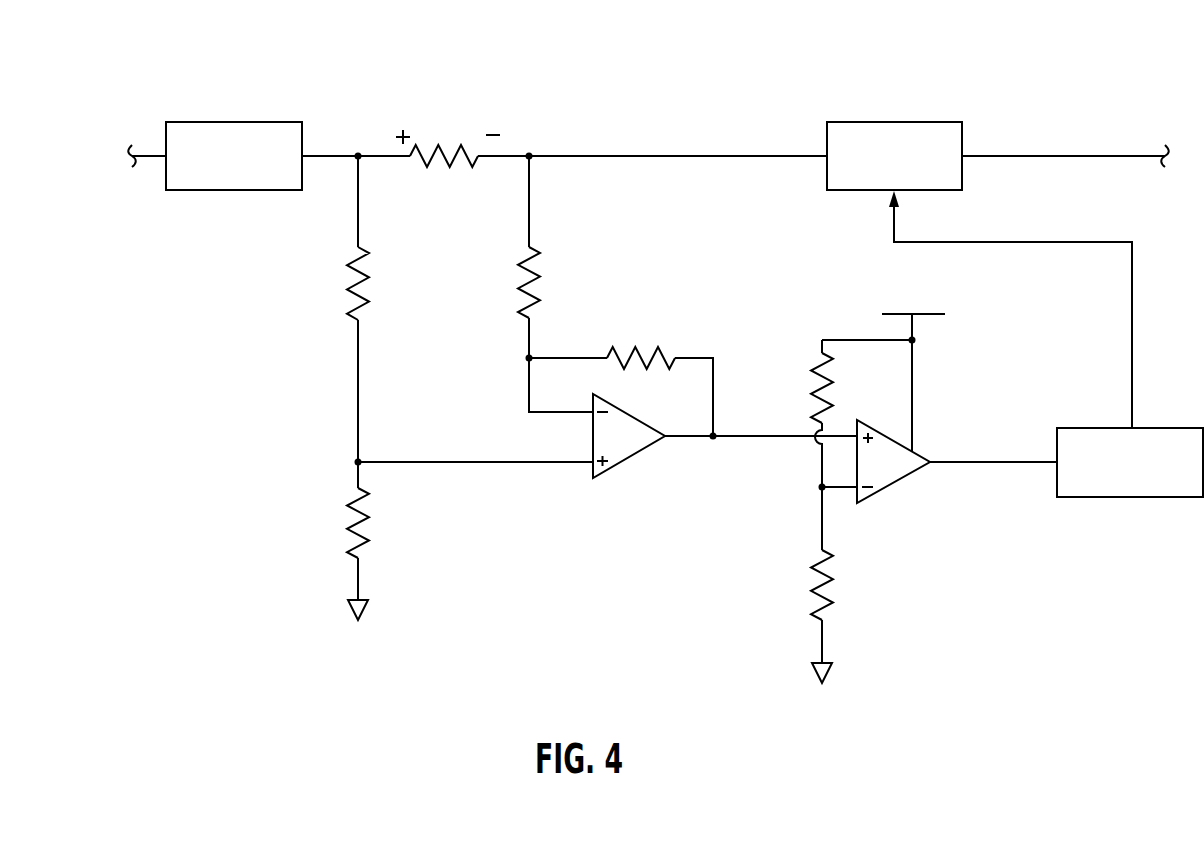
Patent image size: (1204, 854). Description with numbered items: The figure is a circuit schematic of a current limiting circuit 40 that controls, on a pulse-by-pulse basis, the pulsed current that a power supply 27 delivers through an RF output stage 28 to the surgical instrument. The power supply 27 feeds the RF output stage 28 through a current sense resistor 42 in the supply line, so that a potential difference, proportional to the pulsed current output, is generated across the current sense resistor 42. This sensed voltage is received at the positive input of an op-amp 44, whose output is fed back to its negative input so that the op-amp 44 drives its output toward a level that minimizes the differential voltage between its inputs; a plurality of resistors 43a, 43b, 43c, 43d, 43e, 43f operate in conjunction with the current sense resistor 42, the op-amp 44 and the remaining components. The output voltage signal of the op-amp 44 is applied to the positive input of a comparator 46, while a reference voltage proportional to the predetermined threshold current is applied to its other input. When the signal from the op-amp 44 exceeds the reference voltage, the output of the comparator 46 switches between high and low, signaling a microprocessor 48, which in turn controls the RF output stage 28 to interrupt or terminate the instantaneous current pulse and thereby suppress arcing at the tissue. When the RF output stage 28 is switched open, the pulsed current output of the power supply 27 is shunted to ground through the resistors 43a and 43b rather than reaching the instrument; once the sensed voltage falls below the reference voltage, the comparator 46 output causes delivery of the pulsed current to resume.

The current limiting circuit 40 is at (684, 68).
The power supply 27 is at (207, 121).
The RF output stage 28 is at (860, 121).
The current sense resistor 42 is at (463, 162).
The resistor 43a is at (370, 292).
The resistor 43b is at (370, 530).
The resistor 43c is at (542, 292).
The resistor 43d is at (645, 347).
The resistor 43e is at (810, 378).
The resistor 43f is at (832, 592).
The op-amp 44 is at (634, 458).
The comparator 46 is at (900, 481).
The microprocessor 48 is at (1097, 427).